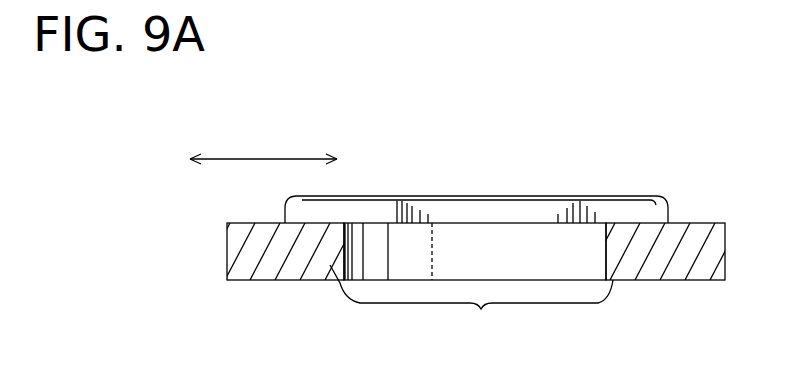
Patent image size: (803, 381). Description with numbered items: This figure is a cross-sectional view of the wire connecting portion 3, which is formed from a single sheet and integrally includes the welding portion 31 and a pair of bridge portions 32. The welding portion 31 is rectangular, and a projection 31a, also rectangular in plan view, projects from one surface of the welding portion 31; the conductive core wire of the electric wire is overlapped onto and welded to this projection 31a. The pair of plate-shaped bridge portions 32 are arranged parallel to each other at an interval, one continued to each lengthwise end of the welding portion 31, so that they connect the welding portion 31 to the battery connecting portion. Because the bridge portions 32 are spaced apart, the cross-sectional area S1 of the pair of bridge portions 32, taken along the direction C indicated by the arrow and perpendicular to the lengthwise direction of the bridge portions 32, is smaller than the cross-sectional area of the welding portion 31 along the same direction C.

The wire connecting portion 3 is at (475, 238).
The welding portion 31 is at (476, 162).
The projection 31a is at (413, 196).
The bridge portion 32 is at (280, 280).
The cross-sectional area of the pair of bridge portions S1 is at (471, 302).
The direction C is at (265, 158).